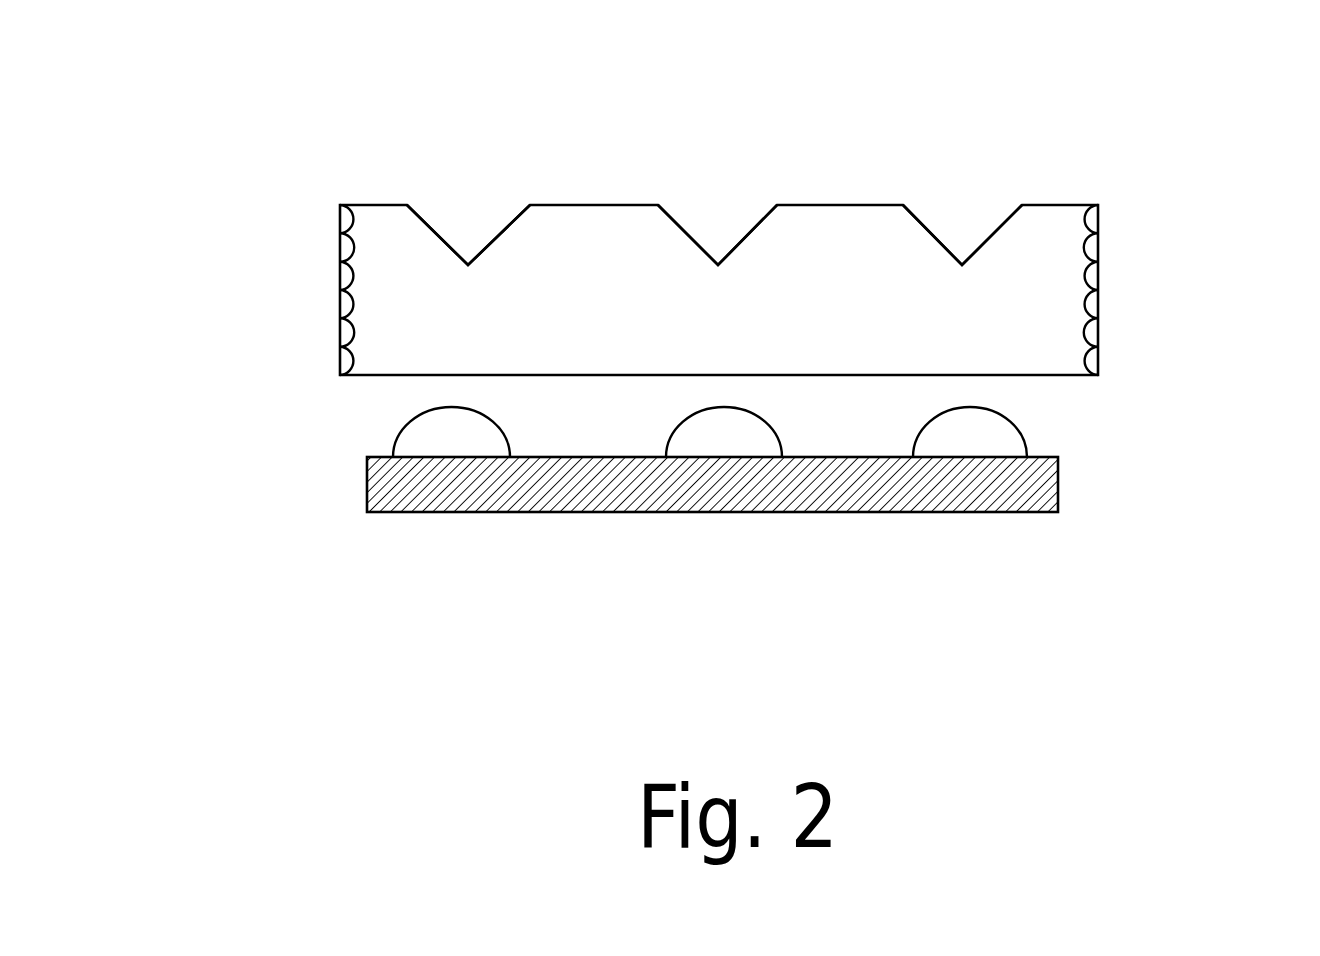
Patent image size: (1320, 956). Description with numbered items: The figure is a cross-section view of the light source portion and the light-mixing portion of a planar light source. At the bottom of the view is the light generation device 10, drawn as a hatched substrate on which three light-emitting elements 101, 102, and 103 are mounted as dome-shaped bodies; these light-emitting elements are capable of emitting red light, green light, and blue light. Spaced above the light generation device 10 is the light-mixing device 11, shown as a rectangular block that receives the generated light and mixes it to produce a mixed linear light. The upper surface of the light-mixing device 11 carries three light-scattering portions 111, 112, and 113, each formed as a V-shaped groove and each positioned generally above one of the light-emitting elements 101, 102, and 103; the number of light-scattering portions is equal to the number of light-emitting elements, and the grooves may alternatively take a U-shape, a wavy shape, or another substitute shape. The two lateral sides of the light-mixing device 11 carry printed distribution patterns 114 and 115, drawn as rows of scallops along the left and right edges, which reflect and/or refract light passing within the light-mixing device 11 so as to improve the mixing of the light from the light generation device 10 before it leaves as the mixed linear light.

The light generation device 10 is at (1058, 480).
The light-emitting element 101 is at (443, 433).
The light-emitting element 102 is at (738, 438).
The light-emitting element 103 is at (978, 438).
The light-mixing device 11 is at (397, 272).
The light-scattering portion 111 is at (500, 233).
The light-scattering portion 112 is at (673, 217).
The light-scattering portion 113 is at (935, 223).
The printed distribution pattern 114 is at (340, 302).
The printed distribution pattern 115 is at (1098, 276).